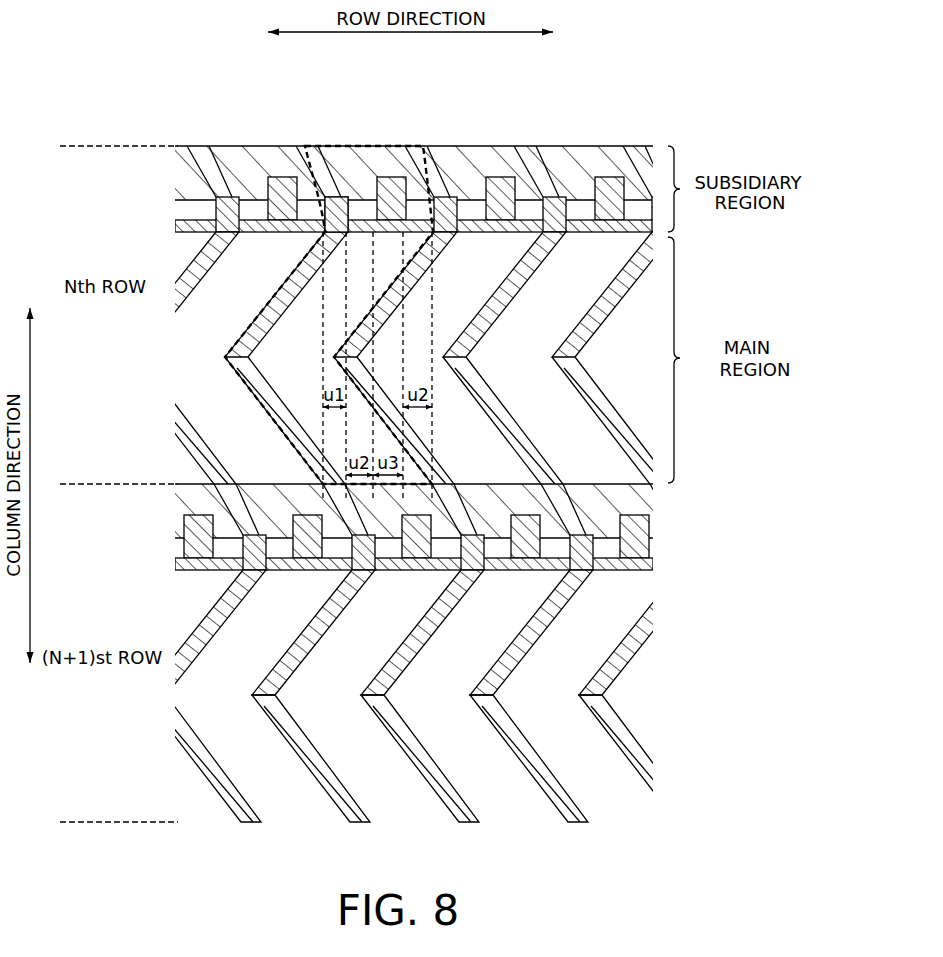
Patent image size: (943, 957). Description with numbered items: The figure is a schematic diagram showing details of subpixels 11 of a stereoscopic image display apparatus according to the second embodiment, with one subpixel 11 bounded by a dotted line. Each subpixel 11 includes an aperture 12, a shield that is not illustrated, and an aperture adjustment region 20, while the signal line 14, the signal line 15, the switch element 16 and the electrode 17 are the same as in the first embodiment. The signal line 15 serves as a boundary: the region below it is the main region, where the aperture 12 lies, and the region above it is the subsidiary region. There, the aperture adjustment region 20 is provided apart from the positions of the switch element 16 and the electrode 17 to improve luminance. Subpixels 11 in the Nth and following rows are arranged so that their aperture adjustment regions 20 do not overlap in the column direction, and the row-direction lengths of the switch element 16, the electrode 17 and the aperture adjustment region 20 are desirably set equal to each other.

The subpixel 11 is at (222, 357).
The aperture 12 is at (305, 322).
The signal line 14 is at (300, 262).
The signal line 15 is at (368, 218).
The switch element 16 is at (337, 197).
The electrode 17 is at (392, 177).
The aperture adjustment region 20 is at (420, 212).